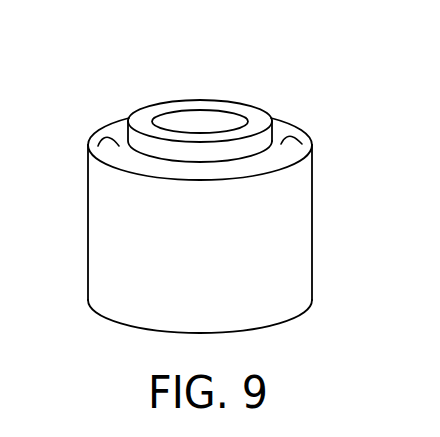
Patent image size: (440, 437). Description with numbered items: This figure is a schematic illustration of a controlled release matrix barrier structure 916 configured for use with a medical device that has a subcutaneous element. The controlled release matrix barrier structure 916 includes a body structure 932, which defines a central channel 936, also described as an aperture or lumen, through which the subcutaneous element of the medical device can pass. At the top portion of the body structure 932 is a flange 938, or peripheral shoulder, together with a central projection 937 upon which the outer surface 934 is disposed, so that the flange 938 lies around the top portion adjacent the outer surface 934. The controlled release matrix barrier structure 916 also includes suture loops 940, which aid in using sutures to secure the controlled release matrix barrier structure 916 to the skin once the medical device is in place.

The controlled release matrix barrier structure 916 is at (266, 87).
The body structure 932 is at (300, 223).
The outer surface 934 is at (151, 110).
The central channel 936 is at (198, 126).
The central projection 937 is at (136, 142).
The flange 938 is at (283, 128).
The suture loops 940 is at (103, 137).